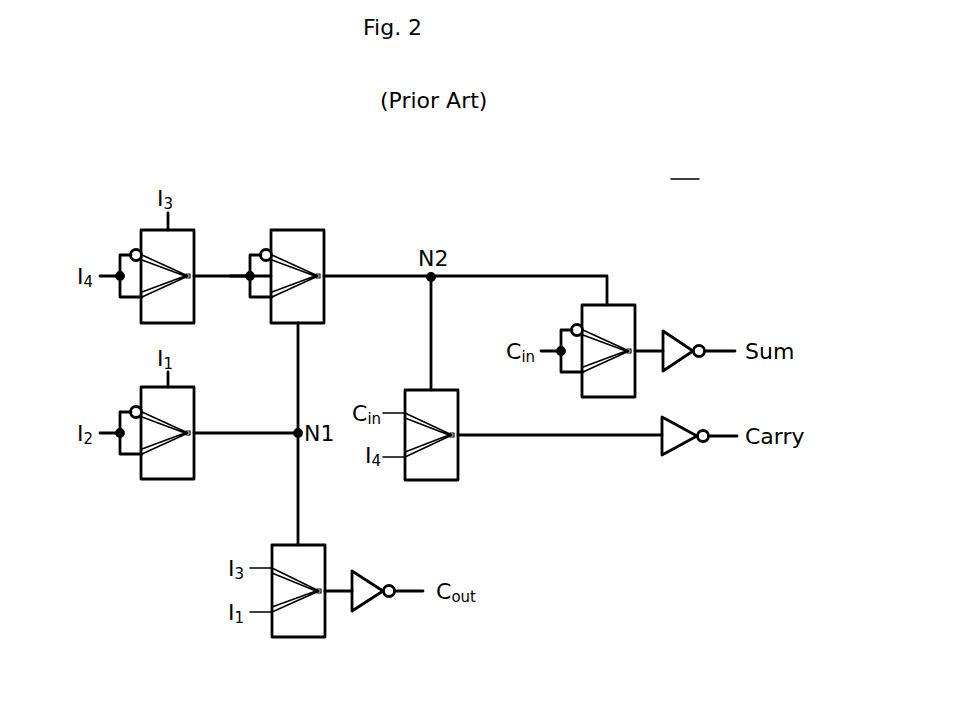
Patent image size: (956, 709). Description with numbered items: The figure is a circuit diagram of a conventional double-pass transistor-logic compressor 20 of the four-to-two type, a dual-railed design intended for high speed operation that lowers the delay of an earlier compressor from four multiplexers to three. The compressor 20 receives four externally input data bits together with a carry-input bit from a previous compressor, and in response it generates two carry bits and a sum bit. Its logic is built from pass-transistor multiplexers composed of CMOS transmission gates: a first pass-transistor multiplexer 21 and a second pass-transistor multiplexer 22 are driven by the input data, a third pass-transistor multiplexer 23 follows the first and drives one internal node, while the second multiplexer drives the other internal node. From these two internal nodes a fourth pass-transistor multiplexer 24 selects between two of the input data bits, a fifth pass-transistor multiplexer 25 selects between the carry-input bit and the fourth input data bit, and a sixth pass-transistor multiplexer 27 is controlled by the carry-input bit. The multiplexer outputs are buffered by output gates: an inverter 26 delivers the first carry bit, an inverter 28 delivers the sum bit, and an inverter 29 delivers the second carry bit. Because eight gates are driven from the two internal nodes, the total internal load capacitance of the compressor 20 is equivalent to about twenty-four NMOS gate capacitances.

The DPL 4-2 compressor 20 is at (685, 167).
The pass-transistor multiplexer 21 is at (184, 230).
The pass-transistor multiplexer 22 is at (184, 387).
The pass-transistor multiplexer 23 is at (309, 230).
The pass-transistor multiplexer 24 is at (310, 545).
The pass-transistor multiplexer 25 is at (445, 390).
The inverter 26 is at (368, 575).
The pass-transistor multiplexer 27 is at (622, 305).
The inverter 28 is at (680, 333).
The inverter 29 is at (683, 418).